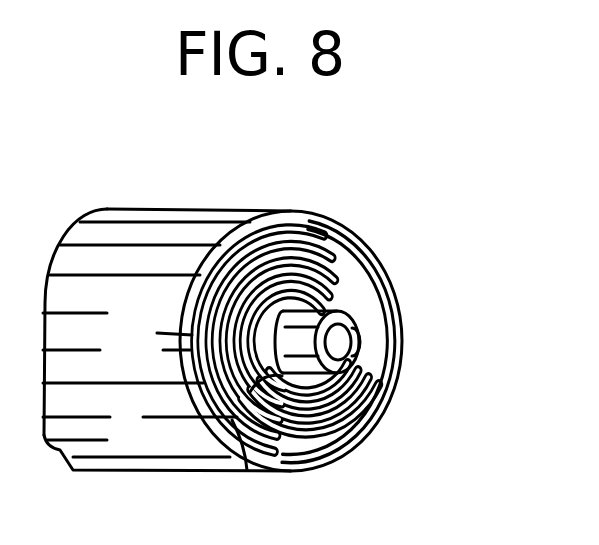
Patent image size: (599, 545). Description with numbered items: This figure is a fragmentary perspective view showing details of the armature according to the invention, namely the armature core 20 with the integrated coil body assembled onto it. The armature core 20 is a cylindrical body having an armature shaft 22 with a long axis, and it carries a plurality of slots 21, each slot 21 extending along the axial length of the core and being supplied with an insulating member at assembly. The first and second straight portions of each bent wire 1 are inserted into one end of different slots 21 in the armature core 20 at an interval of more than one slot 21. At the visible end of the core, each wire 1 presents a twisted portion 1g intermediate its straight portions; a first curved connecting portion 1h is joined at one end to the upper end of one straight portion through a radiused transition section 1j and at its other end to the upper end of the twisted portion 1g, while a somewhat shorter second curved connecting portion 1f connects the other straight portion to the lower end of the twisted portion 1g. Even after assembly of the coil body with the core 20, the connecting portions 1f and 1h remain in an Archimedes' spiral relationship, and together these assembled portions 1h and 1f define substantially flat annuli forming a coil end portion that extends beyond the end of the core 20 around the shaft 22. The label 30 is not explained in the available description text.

The bent wire 1 is at (349, 230).
The second curved connecting portion 1f is at (282, 309).
The twisted portion 1g is at (258, 386).
The first curved connecting portion 1h is at (237, 420).
The radiused transition section 1j is at (242, 455).
The armature core 20 is at (143, 240).
The slot 21 is at (116, 388).
The armature shaft 22 is at (343, 311).
The blades 30 is at (283, 257).